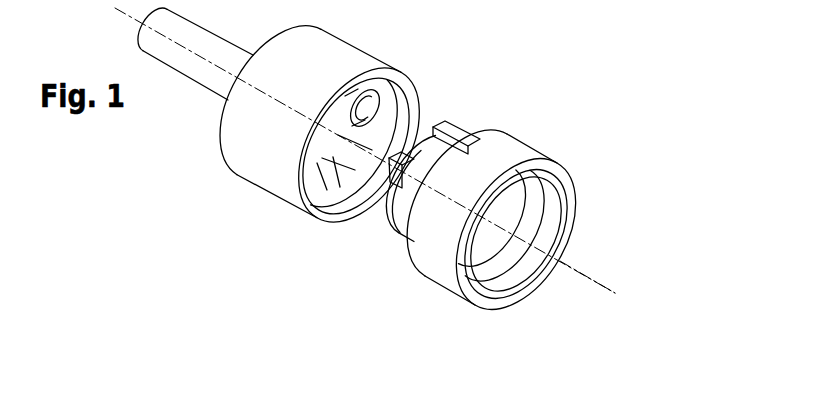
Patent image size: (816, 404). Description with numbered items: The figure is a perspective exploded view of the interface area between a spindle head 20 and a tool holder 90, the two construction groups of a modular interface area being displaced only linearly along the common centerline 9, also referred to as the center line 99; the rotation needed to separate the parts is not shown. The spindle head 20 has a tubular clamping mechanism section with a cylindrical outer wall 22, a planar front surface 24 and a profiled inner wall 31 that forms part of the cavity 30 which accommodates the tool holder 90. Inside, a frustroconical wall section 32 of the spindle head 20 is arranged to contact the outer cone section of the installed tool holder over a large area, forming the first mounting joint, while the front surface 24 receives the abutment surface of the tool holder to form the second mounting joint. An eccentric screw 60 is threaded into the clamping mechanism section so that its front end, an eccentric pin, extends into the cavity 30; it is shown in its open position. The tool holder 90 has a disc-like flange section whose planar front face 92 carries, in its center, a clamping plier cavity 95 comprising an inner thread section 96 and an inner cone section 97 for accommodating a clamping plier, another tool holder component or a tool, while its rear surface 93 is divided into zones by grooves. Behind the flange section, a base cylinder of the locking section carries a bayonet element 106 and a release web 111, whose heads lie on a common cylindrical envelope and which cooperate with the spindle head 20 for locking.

The centerline 9 is at (598, 286).
The center line 99 is at (587, 277).
The spindle head 20 is at (243, 178).
The cylindrical outer wall 22 is at (275, 188).
The front surface 24 is at (308, 190).
The profiled inner wall 31 is at (322, 188).
The frustroconical wall section 32 is at (396, 121).
The eccentric screw 60 is at (378, 110).
The cavity 30 is at (339, 203).
The bayonet element 106 is at (388, 183).
The release web 111 is at (450, 137).
The tool holder 90 is at (535, 136).
The front face 92 is at (523, 293).
The rear surface 93 is at (483, 260).
The clamping plier cavity 95 is at (571, 239).
The inner thread section 96 is at (547, 212).
The inner cone section 97 is at (502, 203).